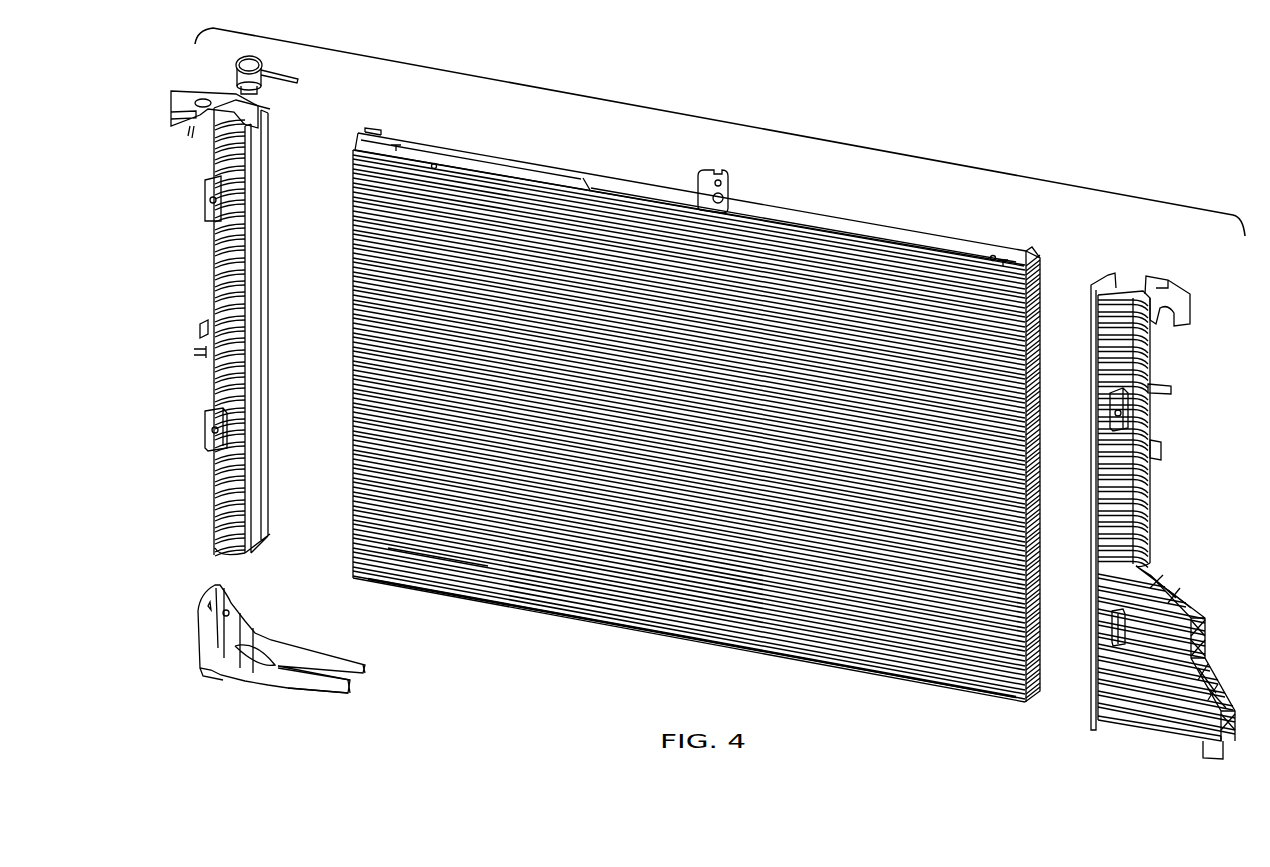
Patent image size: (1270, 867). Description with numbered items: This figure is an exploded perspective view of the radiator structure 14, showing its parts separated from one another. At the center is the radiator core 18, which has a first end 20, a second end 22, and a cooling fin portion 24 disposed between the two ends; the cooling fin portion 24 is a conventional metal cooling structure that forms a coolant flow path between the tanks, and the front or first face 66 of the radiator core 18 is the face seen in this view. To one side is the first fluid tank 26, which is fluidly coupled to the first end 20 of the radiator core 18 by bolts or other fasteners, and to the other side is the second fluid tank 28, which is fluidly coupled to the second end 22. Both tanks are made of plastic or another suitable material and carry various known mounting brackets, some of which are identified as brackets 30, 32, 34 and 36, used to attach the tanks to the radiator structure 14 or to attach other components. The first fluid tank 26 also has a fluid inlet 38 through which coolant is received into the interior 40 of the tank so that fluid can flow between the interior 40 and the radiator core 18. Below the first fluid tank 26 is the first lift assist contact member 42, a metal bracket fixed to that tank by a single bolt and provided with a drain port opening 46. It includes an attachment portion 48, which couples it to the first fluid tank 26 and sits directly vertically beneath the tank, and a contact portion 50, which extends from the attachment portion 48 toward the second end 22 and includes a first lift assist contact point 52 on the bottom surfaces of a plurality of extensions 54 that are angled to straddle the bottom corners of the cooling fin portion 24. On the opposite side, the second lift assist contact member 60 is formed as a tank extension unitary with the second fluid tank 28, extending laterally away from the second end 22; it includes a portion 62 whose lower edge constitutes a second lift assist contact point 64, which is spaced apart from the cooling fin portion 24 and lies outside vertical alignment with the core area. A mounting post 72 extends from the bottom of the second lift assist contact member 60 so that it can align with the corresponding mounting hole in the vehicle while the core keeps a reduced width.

The radiator structure 14 is at (714, 114).
The radiator core 18 is at (805, 655).
The first end 20 is at (349, 146).
The second end 22 is at (1030, 276).
The cooling fin portion 24 is at (568, 570).
The first fluid tank 26 is at (215, 283).
The second fluid tank 28 is at (1127, 488).
The mounting bracket 30 is at (175, 88).
The mounting bracket 32 is at (202, 205).
The mounting bracket 34 is at (1165, 285).
The mounting bracket 36 is at (1120, 403).
The fluid inlet 38 is at (240, 55).
The interior 40 is at (258, 212).
The first lift assist contact member 42 is at (213, 693).
The drain port opening 46 is at (223, 603).
The attachment portion 48 is at (200, 667).
The contact portion 50 is at (280, 683).
The first lift assist contact point 52 is at (328, 683).
The extensions 54 is at (352, 682).
The second lift assist contact member 60 is at (1190, 601).
The portion 62 is at (1102, 650).
The second lift assist contact point 64 is at (1128, 718).
The first face 66 is at (455, 540).
The mounting post 72 is at (1207, 746).